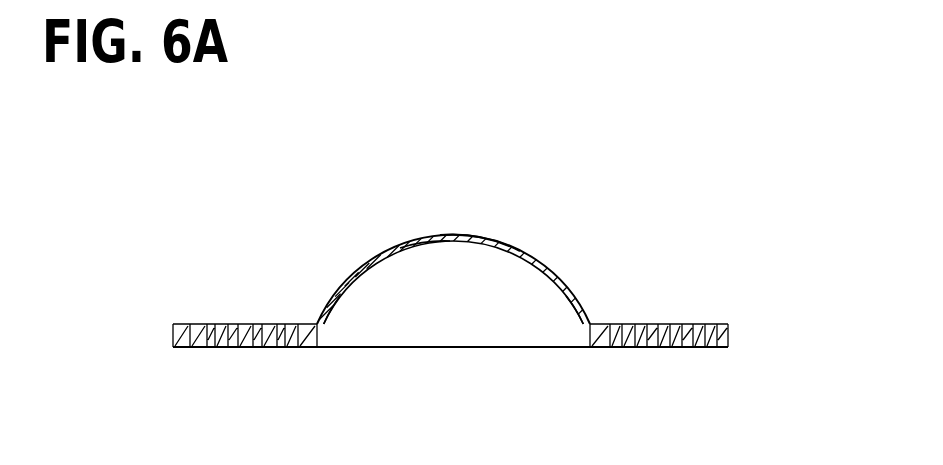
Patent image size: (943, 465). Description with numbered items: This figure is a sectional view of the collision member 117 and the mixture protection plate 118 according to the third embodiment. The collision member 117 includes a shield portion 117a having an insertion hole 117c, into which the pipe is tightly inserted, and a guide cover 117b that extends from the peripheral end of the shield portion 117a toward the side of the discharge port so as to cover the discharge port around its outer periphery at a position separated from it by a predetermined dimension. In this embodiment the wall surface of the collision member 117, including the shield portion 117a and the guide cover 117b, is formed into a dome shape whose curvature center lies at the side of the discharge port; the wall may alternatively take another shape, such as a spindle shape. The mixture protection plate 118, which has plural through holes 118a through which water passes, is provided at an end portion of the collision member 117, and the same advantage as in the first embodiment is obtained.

The collision member 117 is at (377, 249).
The shield portion 117a is at (421, 246).
The guide cover 117b is at (338, 300).
The insertion hole 117c is at (500, 240).
The mixture protection plate 118 is at (728, 327).
The through holes 118a is at (662, 324).